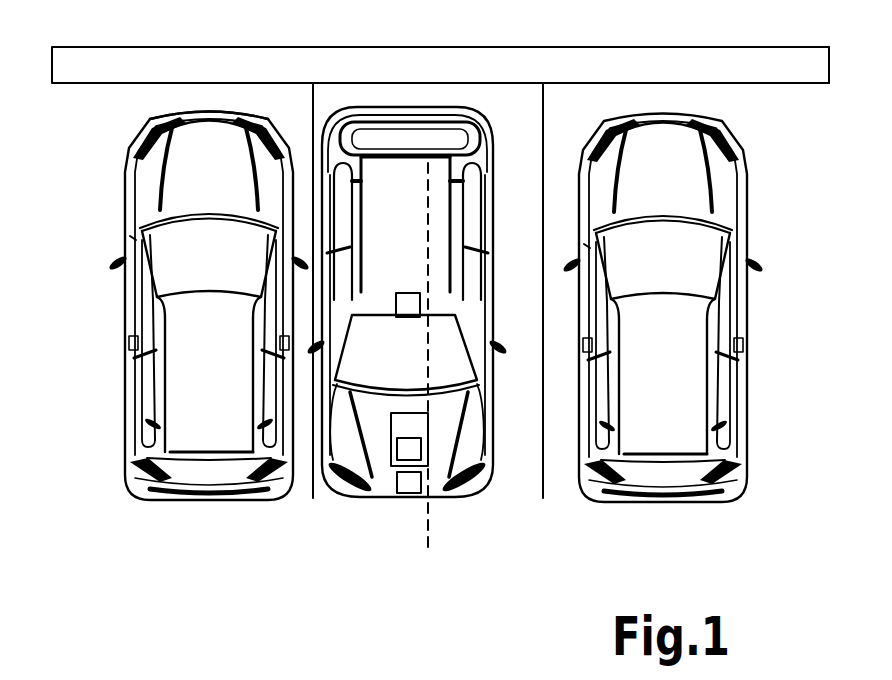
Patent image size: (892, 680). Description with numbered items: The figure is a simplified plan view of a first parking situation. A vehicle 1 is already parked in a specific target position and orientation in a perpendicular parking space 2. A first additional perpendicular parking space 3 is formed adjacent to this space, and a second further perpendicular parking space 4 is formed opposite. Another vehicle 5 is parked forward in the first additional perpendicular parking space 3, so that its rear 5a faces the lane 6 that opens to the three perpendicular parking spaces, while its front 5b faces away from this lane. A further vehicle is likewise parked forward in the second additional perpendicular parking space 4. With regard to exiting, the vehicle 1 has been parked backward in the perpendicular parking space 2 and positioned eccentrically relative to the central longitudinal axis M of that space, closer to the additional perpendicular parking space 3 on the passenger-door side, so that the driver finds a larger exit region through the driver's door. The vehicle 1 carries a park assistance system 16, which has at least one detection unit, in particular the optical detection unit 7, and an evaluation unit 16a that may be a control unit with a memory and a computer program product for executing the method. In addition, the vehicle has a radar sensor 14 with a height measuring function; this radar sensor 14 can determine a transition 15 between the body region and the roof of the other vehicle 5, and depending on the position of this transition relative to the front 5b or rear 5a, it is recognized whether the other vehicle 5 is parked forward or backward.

The vehicle 1 is at (428, 147).
The perpendicular parking space 2 is at (521, 106).
The first additional perpendicular parking space 3 is at (143, 110).
The second further perpendicular parking space 4 is at (760, 112).
The other vehicle 5 is at (194, 295).
The rear 5a is at (232, 501).
The front 5b is at (222, 118).
The lane 6 is at (697, 402).
The optical detection unit 7 is at (413, 316).
The radar sensor 14 is at (410, 492).
The transition 15 is at (133, 238).
The park assistance system 16 is at (425, 433).
The evaluation unit 16a is at (399, 452).
The central longitudinal axis M is at (432, 525).